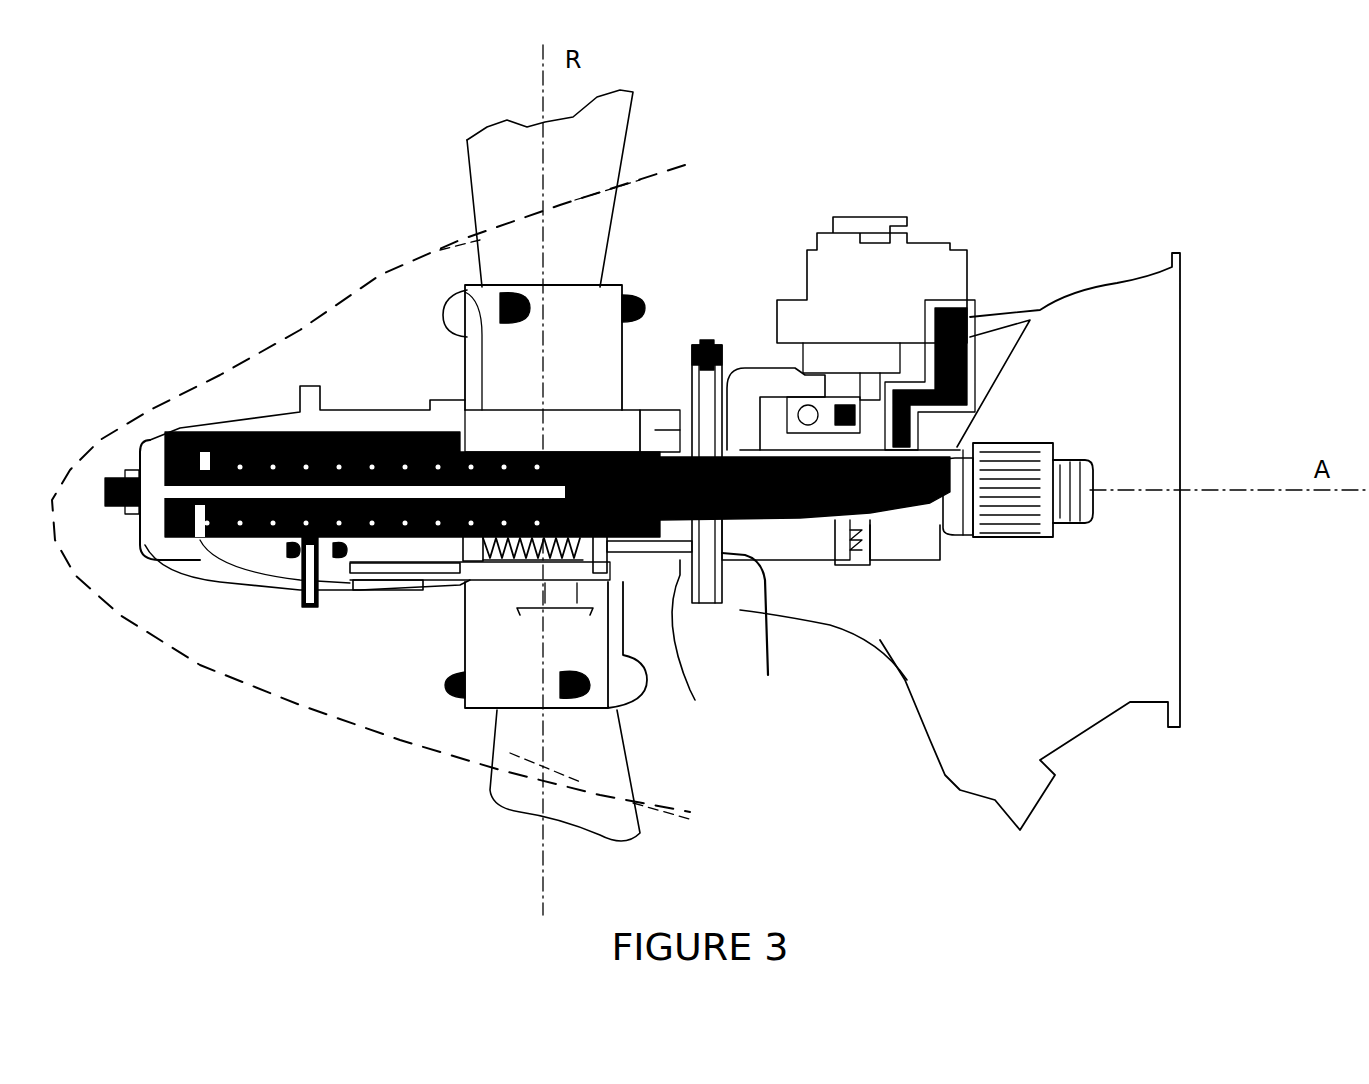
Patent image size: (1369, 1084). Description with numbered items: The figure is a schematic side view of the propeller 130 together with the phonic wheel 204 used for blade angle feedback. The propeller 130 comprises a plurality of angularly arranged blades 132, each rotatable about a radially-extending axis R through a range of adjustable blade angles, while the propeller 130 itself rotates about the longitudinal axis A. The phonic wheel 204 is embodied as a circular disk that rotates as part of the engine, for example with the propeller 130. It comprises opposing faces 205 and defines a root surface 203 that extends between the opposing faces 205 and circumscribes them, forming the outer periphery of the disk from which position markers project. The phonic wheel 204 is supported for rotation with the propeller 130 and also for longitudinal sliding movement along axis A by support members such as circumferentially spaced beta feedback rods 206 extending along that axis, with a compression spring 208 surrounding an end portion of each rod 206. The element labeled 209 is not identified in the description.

The propeller 130 is at (222, 240).
The blades 132 is at (463, 140).
The root surface 203 is at (707, 433).
The phonic wheel 204 is at (705, 345).
The opposing faces 205 is at (688, 578).
The beta feedback rods 206 is at (628, 560).
The compression spring 208 is at (480, 575).
The bracket 209 is at (352, 592).